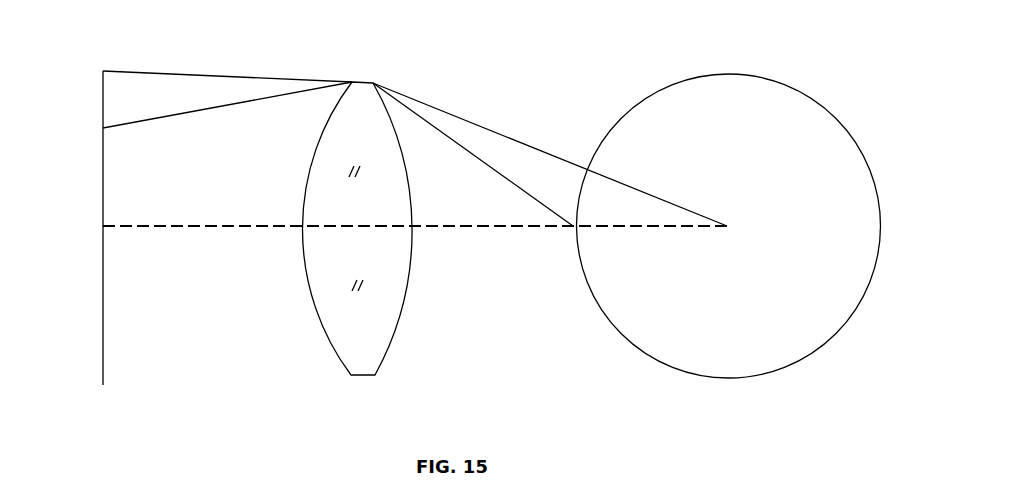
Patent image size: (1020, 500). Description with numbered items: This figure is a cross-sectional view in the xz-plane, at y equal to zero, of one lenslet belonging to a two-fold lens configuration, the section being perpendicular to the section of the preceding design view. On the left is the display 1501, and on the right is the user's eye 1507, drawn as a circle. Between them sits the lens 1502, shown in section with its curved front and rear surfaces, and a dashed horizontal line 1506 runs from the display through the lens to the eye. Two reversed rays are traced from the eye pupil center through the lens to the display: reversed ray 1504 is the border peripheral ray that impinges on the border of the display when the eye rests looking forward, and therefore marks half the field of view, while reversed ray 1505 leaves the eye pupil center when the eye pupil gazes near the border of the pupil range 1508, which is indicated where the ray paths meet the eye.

The display 1501 is at (100, 90).
The lens 1502 is at (347, 338).
The reversed ray 1504 is at (167, 74).
The reversed ray 1505 is at (143, 122).
The optical axis 1506 is at (202, 228).
The user's eye 1507 is at (792, 89).
The pupil range 1508 is at (587, 168).